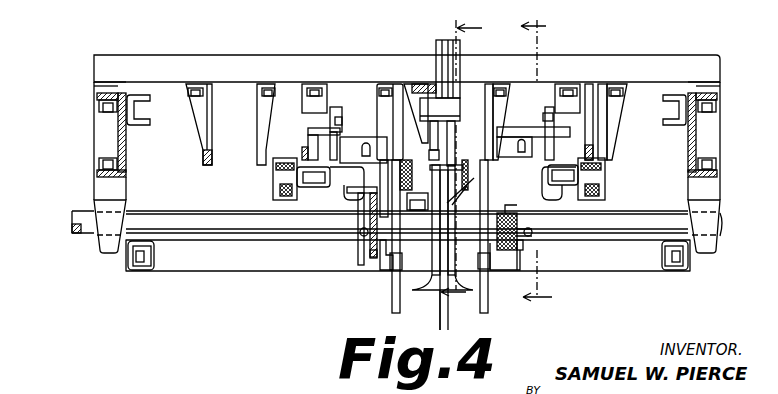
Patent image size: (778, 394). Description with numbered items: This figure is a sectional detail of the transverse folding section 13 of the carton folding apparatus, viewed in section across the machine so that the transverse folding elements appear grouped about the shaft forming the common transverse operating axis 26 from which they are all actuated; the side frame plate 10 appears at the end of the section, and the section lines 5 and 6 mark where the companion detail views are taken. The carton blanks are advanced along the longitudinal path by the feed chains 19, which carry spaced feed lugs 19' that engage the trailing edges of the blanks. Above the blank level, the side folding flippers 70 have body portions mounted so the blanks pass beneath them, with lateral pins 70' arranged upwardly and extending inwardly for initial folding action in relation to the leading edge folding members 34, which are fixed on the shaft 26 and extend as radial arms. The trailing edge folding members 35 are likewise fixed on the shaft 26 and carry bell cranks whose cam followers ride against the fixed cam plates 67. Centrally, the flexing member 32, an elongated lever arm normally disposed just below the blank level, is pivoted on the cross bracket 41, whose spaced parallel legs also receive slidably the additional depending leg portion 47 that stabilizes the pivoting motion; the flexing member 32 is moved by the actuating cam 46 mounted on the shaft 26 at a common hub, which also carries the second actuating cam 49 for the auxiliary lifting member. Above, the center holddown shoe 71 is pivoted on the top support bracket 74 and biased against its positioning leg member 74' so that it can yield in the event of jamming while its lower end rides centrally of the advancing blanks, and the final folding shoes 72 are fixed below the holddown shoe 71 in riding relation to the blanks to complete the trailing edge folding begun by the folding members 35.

The transverse folding section 13 is at (90, 60).
The frame side plate 10 is at (697, 138).
The common transverse operating axis 26 is at (80, 212).
The top support bracket 74 is at (430, 63).
The center holddown shoe 71 is at (462, 62).
The positioning leg member 74' is at (468, 111).
The final folding shoes 72 is at (393, 108).
The lateral pins 70' is at (439, 135).
The side folding flippers 70 is at (461, 143).
The flexing member 32 is at (445, 162).
The feed lugs 19' is at (444, 172).
The feed chains 19 is at (438, 188).
The cross bracket 41 is at (472, 182).
The additional depending leg portion 47 is at (477, 190).
The leading edge folding members 34 is at (365, 216).
The trailing edge folding members 35 is at (374, 254).
The fixed cam plates 67 is at (392, 308).
The actuating cam 46 is at (475, 291).
The second actuating cam 49 is at (426, 283).
The section line 5- 5 is at (461, 159).
The section line 6- 6 is at (536, 161).